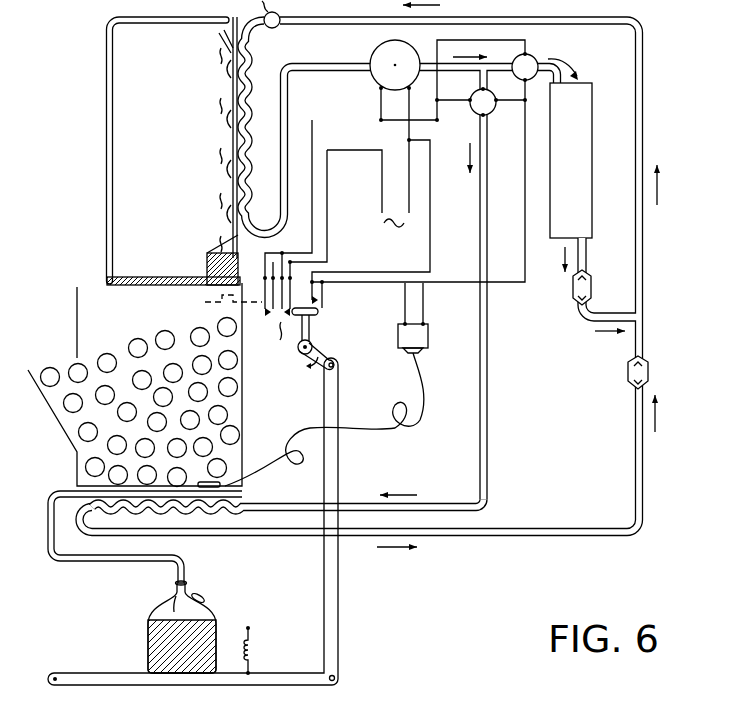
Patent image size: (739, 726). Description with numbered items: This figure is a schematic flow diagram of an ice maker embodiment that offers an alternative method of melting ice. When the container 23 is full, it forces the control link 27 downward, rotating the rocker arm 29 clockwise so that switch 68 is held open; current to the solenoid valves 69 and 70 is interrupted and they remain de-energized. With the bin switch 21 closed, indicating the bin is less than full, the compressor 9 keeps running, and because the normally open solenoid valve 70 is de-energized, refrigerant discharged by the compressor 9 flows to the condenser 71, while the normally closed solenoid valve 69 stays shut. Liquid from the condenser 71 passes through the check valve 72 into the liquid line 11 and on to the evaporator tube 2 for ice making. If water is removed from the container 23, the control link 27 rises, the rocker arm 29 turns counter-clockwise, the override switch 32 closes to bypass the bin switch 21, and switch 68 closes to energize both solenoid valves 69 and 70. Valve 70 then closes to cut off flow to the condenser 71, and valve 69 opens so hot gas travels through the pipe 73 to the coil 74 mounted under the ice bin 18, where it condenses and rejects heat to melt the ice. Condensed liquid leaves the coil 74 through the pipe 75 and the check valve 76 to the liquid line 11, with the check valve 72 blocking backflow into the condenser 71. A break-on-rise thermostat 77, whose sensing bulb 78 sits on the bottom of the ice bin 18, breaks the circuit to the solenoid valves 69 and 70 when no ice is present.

The evaporator tube 2 is at (287, 72).
The compressor 9 is at (373, 47).
The liquid line 11 is at (388, 277).
The ice bin 18 is at (163, 385).
The bin switch 21 is at (270, 323).
The container 23 is at (156, 627).
The control link 27 is at (359, 602).
The rocker arm 29 is at (331, 338).
The override switch 32 is at (283, 350).
The switch 68 is at (343, 296).
The solenoid valve 69 is at (471, 109).
The solenoid valve 70 is at (553, 52).
The condenser 71 is at (609, 167).
The check valve 72 is at (571, 292).
The pipe 73 is at (488, 386).
The coil 74 is at (250, 505).
The pipe 75 is at (204, 540).
The check valve 76 is at (669, 372).
The thermostat 77 is at (441, 319).
The sensing bulb 78 is at (243, 462).